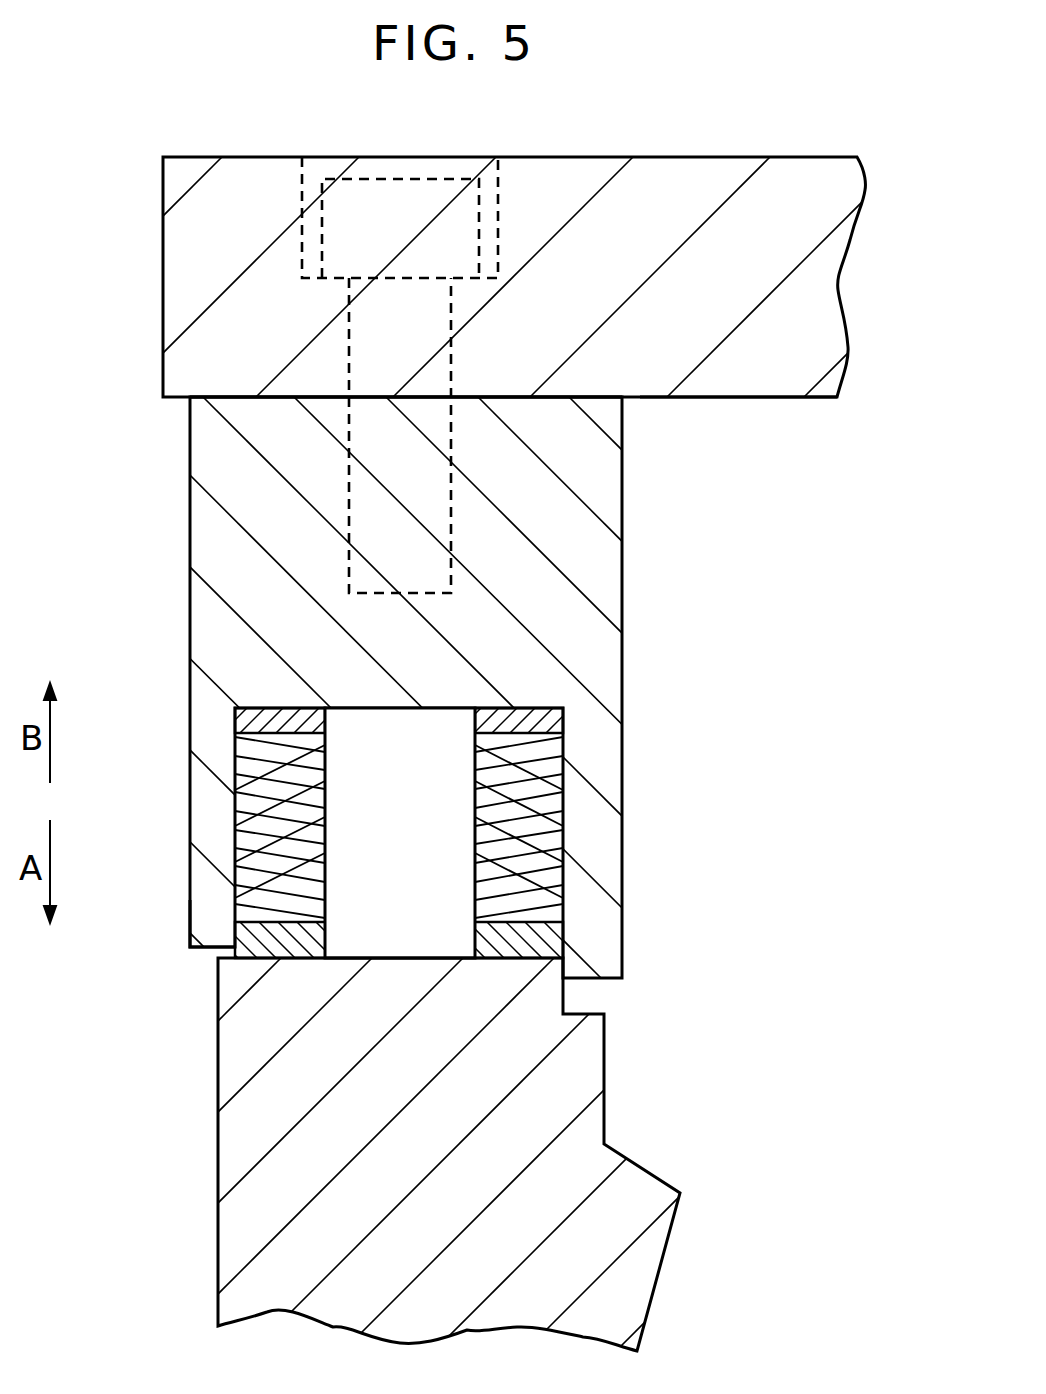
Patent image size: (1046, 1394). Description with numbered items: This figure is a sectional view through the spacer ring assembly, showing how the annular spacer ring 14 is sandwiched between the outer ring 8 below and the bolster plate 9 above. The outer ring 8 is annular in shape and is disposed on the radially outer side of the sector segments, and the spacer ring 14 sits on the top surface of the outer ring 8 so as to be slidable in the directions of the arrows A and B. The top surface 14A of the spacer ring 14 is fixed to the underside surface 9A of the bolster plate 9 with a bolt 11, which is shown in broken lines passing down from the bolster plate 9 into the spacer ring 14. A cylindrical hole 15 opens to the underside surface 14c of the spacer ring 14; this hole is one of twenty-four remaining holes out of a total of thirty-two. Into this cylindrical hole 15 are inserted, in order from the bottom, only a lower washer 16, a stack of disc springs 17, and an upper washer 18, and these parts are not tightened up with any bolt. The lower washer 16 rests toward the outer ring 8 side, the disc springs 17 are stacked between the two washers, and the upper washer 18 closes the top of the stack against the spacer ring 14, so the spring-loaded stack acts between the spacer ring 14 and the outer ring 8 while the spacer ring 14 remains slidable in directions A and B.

The outer ring 8 is at (268, 1272).
The bolster plate 9 is at (803, 286).
The underside surface of bolster plate 9A is at (742, 397).
The bolt 11 is at (355, 222).
The spacer ring 14 is at (602, 658).
The top surface of spacer ring 14A is at (256, 397).
The underside surface of spacer ring 14c is at (193, 947).
The cylindrical hole 15 is at (562, 944).
The lower washer 16 is at (277, 937).
The disc springs 17 is at (258, 800).
The upper washer 18 is at (280, 722).